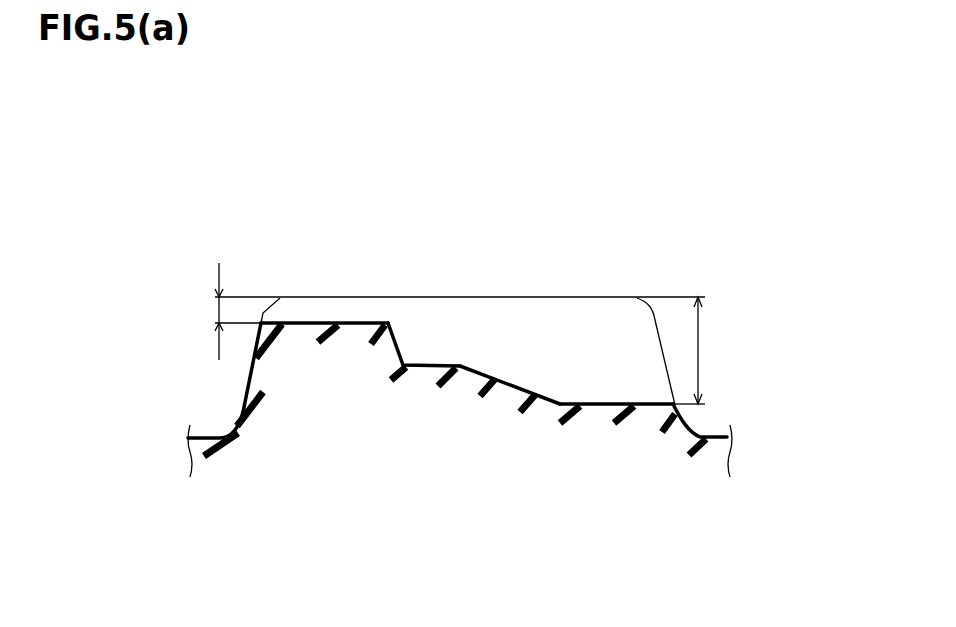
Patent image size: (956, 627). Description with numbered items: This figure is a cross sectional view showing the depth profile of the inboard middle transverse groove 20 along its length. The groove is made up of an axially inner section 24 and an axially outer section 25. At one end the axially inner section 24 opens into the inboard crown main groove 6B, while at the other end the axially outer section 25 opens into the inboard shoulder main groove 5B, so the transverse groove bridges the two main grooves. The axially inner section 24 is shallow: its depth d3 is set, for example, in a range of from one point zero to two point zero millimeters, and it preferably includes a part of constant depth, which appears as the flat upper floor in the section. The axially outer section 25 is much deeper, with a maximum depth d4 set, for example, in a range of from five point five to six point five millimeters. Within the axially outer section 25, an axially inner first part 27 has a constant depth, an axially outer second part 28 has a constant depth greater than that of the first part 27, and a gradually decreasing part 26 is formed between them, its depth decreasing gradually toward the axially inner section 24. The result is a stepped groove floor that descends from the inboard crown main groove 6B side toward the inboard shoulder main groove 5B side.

The inboard middle transverse groove 20 is at (464, 268).
The axially inner section 24 is at (333, 320).
The axially outer section 25 is at (530, 297).
The gradually decreasing part 26 is at (513, 380).
The first part 27 is at (423, 363).
The second part 28 is at (616, 325).
The inboard crown main groove 6B is at (217, 425).
The inboard shoulder main groove 5B is at (698, 425).
The depth of the axially inner section d3 is at (199, 311).
The maximum depth of the axially outer section d4 is at (718, 350).